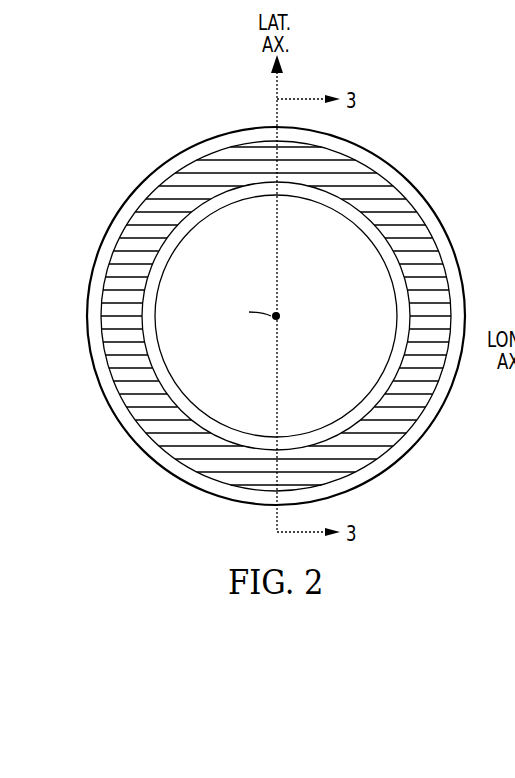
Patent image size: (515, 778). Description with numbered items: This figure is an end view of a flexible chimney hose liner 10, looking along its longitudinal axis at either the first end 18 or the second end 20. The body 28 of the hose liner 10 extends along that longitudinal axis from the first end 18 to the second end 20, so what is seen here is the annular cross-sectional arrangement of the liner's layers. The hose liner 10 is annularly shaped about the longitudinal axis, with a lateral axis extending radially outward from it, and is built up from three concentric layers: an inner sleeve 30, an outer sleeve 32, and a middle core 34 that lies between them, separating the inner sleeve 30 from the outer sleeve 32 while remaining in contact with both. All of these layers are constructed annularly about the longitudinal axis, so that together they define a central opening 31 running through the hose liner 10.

The hose liner 10 is at (388, 132).
The first end 18 is at (383, 450).
The second end 20 is at (276, 316).
The body 28 is at (450, 397).
The inner sleeve 30 is at (397, 296).
The central opening 31 is at (337, 261).
The outer sleeve 32 is at (462, 272).
The middle core 34 is at (415, 220).